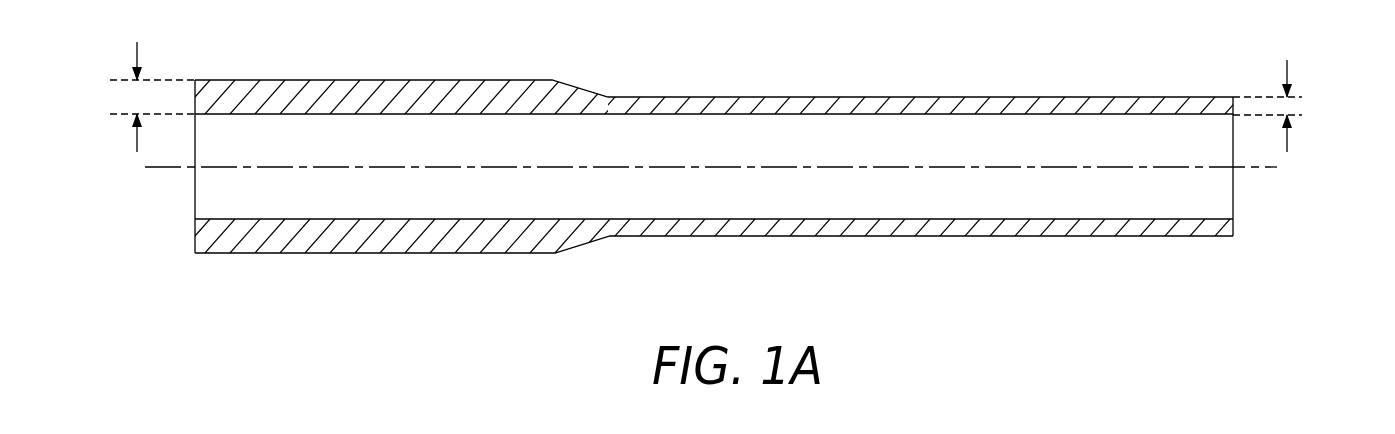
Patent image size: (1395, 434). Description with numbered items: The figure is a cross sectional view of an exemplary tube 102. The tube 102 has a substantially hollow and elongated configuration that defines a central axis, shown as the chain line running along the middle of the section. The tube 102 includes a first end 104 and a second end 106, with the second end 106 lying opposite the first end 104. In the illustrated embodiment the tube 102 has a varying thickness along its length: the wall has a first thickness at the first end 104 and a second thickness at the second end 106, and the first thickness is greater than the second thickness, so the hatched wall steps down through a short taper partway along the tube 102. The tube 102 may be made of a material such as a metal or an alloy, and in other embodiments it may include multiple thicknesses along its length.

The tube 102 is at (598, 58).
The first end 104 is at (180, 58).
The second end 106 is at (1262, 62).